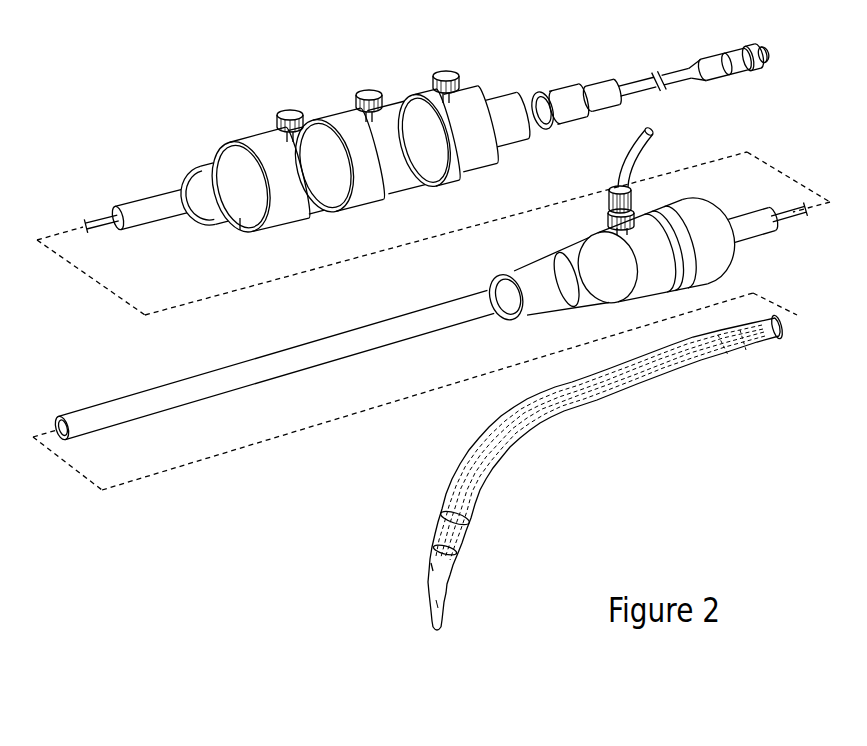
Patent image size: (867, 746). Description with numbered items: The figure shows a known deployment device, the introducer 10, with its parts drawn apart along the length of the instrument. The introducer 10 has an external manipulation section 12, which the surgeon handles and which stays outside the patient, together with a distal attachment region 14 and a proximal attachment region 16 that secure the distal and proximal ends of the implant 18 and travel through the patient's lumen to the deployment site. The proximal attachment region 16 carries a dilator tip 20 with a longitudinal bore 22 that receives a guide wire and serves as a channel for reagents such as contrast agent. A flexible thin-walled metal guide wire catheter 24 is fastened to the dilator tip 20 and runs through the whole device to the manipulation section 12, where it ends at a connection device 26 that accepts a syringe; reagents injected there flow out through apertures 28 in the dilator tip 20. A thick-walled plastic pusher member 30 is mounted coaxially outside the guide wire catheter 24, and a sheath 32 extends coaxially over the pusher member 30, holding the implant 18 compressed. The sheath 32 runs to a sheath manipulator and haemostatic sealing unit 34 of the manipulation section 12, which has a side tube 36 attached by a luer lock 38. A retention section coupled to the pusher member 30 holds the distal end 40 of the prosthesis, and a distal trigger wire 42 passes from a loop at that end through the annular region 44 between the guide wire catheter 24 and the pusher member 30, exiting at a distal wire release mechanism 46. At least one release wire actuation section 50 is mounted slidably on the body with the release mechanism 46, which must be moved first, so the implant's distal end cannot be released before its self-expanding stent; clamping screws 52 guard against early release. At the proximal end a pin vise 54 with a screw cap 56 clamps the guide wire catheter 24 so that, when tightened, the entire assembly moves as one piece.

The introducer 10 is at (174, 129).
The external manipulation section 12 is at (231, 119).
The distal attachment region 14 is at (728, 349).
The proximal attachment region 16 is at (462, 592).
The implant 18 is at (667, 374).
The dilator tip 20 is at (436, 602).
The bore 22 is at (436, 625).
The guide wire catheter 24 is at (99, 218).
The connection device 26 is at (744, 63).
The apertures 28 is at (441, 558).
The pusher member 30 is at (168, 214).
The sheath 32 is at (162, 392).
The sheath manipulator and haemostatic sealing unit 34 is at (702, 190).
The side tube 36 is at (626, 153).
The luer lock 38 is at (616, 195).
The distal end 40 is at (708, 353).
The distal trigger wire 42 is at (97, 236).
The annular region 44 is at (121, 225).
The distal wire release mechanism 46 is at (243, 234).
The release wire actuation section 50 is at (344, 209).
The clamping screws 52 is at (434, 79).
The pin vise 54 is at (566, 91).
The screw cap 56 is at (607, 89).